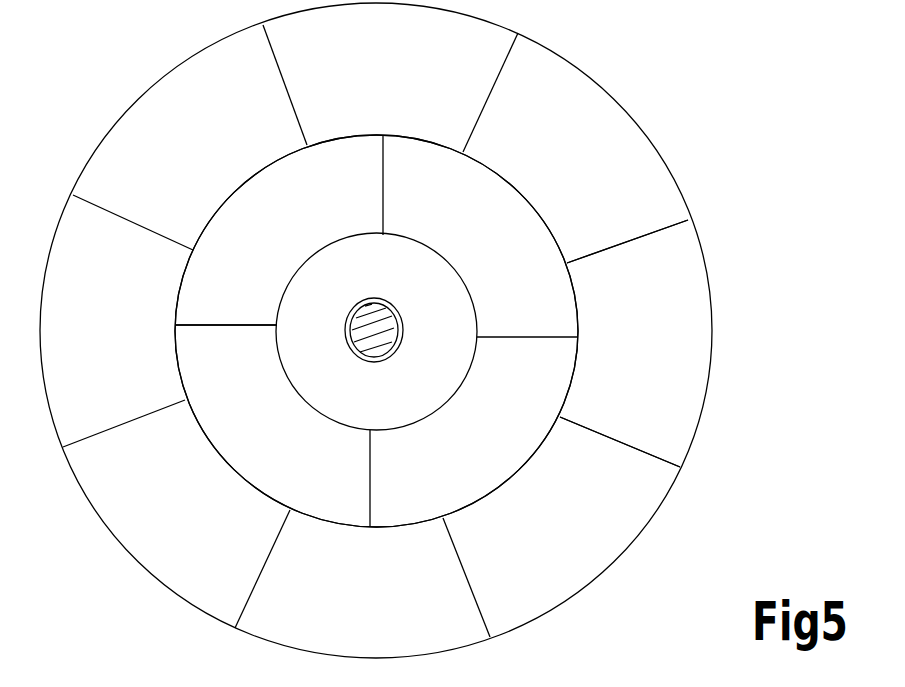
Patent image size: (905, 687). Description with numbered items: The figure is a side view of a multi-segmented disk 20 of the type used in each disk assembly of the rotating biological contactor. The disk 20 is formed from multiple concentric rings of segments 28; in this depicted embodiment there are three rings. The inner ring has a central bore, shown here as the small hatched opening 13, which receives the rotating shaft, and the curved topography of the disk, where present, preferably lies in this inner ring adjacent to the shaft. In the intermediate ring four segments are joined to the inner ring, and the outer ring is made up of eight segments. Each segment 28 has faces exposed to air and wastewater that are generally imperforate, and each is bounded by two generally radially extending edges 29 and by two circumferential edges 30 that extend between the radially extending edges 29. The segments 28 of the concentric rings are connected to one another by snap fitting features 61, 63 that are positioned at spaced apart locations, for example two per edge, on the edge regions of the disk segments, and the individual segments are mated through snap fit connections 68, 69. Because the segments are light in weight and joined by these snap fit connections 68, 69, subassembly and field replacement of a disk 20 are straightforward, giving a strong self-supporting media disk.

The disk 20 is at (658, 147).
The segment 28 is at (680, 325).
The circumferential edge 30 is at (693, 438).
The central hub 13 is at (418, 399).
The radially extending edge 29 is at (127, 428).
The snap fitting feature 61 is at (248, 327).
The snap fitting feature 63 is at (226, 376).
The snap fit connection 68 is at (257, 490).
The snap fit connection 69 is at (376, 357).